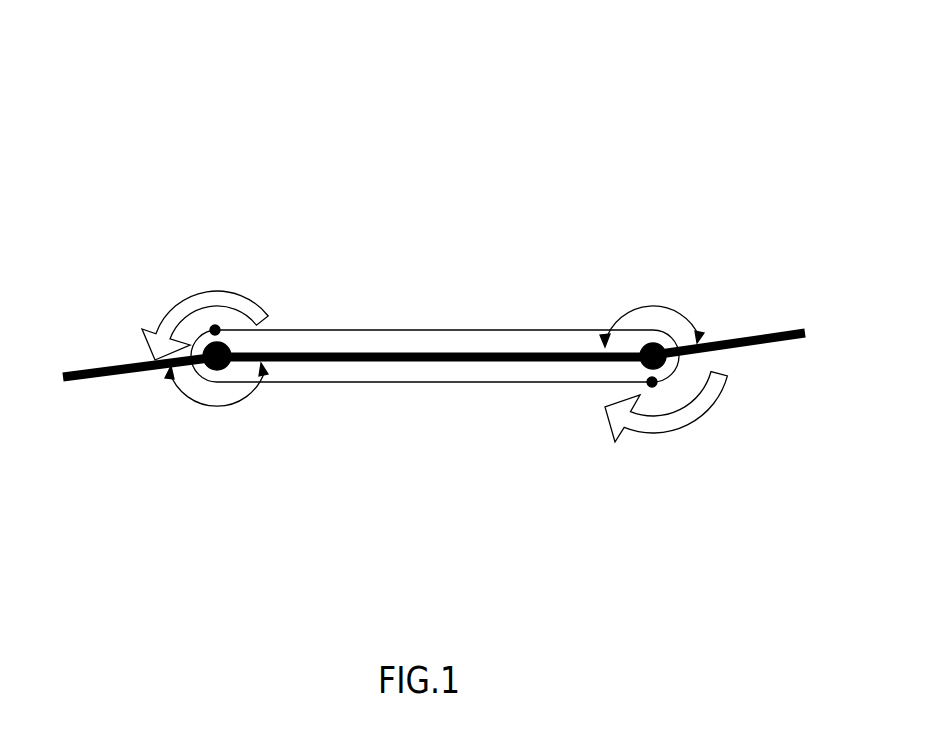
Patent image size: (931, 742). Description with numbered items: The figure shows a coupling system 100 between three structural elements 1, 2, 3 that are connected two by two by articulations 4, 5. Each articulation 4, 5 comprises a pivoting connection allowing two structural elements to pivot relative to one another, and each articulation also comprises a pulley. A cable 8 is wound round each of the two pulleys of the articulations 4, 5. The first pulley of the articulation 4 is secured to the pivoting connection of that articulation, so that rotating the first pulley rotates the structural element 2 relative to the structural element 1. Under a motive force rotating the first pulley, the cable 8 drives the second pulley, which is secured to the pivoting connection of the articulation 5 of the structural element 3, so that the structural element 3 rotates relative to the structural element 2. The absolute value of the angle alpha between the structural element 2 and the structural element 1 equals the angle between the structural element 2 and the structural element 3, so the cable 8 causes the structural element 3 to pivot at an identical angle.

The coupling system 100 is at (508, 190).
The structural element 1 is at (84, 385).
The structural element 2 is at (500, 366).
The structural element 3 is at (795, 343).
The articulation 4 is at (230, 387).
The articulation 5 is at (632, 372).
The cable 8 is at (437, 318).